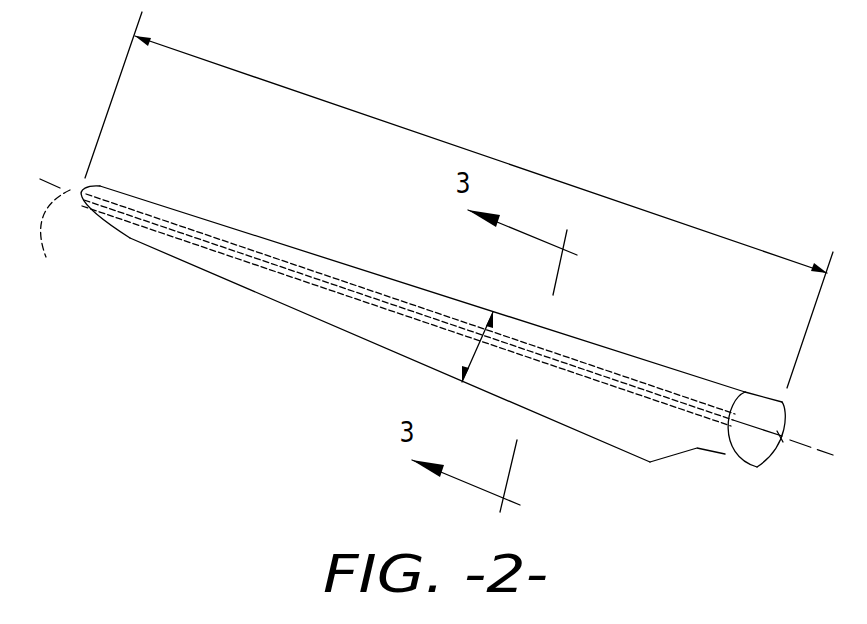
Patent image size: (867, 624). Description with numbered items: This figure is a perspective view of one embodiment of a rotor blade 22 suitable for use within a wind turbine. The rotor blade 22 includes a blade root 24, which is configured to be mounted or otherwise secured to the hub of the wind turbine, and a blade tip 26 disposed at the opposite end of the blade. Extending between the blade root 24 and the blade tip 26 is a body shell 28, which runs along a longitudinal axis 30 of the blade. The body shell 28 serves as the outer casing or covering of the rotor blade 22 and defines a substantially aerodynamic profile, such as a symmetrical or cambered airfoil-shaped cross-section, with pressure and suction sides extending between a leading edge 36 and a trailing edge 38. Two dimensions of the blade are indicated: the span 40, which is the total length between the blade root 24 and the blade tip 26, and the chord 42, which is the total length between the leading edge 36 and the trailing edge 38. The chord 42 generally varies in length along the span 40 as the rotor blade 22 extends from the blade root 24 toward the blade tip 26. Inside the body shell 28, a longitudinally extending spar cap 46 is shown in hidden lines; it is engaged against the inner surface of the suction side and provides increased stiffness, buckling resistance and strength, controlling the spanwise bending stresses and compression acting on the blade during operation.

The rotor blade 22 is at (436, 302).
The blade root 24 is at (742, 447).
The blade tip 26 is at (77, 190).
The body shell 28 is at (253, 274).
The longitudinal axis 30 is at (57, 236).
The leading edge 36 is at (597, 338).
The trailing edge 38 is at (590, 440).
The span 40 is at (412, 127).
The chord 42 is at (473, 347).
The spar cap 46 is at (324, 283).